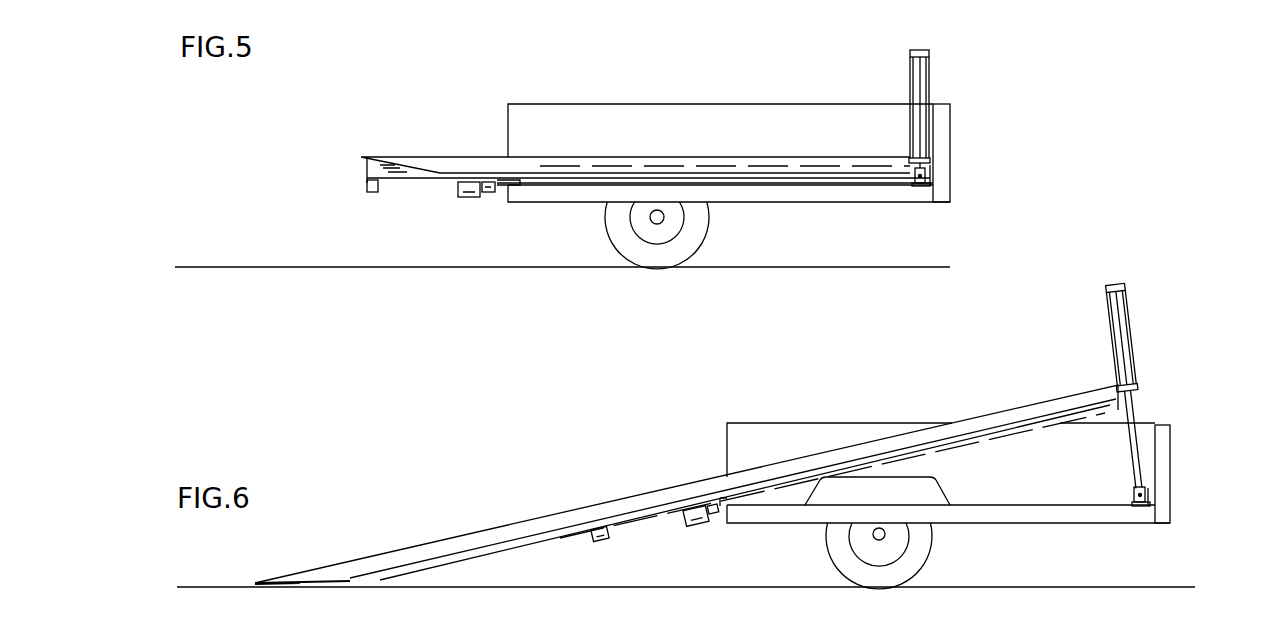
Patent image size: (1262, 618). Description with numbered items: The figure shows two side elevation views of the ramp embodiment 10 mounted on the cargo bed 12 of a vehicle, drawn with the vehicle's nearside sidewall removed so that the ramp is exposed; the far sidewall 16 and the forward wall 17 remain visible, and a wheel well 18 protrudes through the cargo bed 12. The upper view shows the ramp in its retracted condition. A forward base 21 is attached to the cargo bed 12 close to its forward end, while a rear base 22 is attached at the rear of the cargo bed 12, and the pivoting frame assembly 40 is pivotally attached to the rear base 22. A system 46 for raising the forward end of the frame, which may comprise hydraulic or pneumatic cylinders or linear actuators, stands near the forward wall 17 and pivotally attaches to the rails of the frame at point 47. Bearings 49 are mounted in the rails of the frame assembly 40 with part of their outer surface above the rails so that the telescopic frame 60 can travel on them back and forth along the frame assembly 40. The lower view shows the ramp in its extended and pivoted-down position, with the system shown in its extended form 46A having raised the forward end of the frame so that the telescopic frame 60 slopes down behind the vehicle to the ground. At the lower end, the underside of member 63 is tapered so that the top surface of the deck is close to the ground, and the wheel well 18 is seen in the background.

In FIG. 5, the ramp embodiment 10 is at (784, 164).
In FIG. 5, the cargo bed 12 is at (767, 187).
In FIG. 5, the sidewall 16 is at (679, 103).
In FIG. 6, the sidewall 16 is at (941, 450).
In FIG. 5, the forward wall 17 is at (950, 152).
In FIG. 6, the wheel well 18 is at (860, 492).
In FIG. 5, the forward base 21 is at (922, 187).
In FIG. 5, the rear base 22 is at (507, 187).
In FIG. 5, the pivoting frame assembly 40 is at (420, 182).
In FIG. 6, the pivoting frame assembly 40 is at (968, 450).
In FIG. 5, the system to raise the forward end of the frame 46 is at (909, 74).
In FIG. 6, the extended hydraulic cylinder 46A is at (1133, 417).
In FIG. 6, the pivot attachment point 47 is at (1118, 393).
In FIG. 6, the bearings 49 is at (698, 527).
In FIG. 5, the telescopic frame 60 is at (461, 153).
In FIG. 6, the telescopic frame 60 is at (487, 528).
In FIG. 6, the tapered member 63 is at (275, 582).